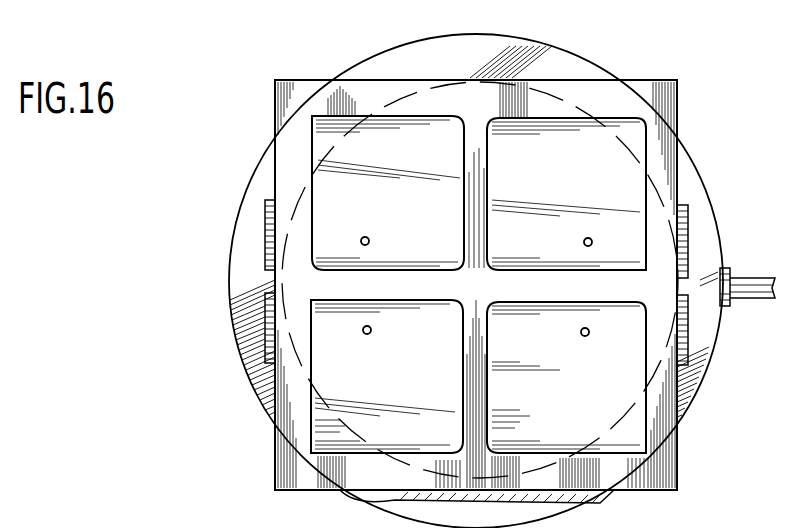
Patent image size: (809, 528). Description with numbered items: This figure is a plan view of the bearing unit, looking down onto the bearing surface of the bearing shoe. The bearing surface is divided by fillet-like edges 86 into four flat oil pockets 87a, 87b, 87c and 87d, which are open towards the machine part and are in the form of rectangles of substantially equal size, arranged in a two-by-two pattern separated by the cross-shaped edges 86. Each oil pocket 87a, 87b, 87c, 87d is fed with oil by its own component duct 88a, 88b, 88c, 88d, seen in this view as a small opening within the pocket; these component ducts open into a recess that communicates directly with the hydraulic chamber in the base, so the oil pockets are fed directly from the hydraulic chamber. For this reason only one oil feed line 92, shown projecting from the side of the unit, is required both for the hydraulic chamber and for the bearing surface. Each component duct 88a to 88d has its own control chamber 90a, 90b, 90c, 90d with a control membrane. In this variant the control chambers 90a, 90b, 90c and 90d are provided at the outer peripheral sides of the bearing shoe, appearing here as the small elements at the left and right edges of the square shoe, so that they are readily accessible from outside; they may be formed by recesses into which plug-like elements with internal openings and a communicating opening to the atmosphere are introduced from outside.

The fillet-like edges 86 is at (524, 100).
The oil pocket 87a is at (318, 373).
The oil pocket 87b is at (640, 337).
The oil pocket 87c is at (320, 136).
The oil pocket 87d is at (640, 188).
The component duct 88a is at (371, 330).
The component duct 88b is at (581, 332).
The component duct 88c is at (369, 241).
The component duct 88d is at (584, 242).
The control chamber 90a is at (264, 346).
The control chamber 90b is at (690, 315).
The control chamber 90c is at (264, 231).
The control chamber 90d is at (690, 219).
The oil feed line 92 is at (746, 283).